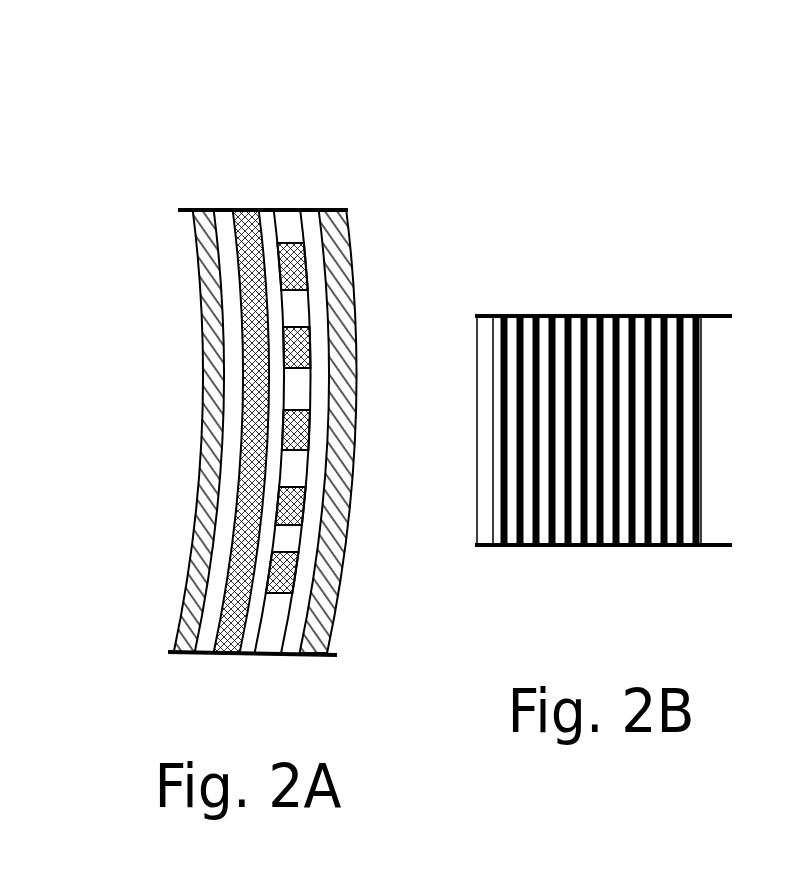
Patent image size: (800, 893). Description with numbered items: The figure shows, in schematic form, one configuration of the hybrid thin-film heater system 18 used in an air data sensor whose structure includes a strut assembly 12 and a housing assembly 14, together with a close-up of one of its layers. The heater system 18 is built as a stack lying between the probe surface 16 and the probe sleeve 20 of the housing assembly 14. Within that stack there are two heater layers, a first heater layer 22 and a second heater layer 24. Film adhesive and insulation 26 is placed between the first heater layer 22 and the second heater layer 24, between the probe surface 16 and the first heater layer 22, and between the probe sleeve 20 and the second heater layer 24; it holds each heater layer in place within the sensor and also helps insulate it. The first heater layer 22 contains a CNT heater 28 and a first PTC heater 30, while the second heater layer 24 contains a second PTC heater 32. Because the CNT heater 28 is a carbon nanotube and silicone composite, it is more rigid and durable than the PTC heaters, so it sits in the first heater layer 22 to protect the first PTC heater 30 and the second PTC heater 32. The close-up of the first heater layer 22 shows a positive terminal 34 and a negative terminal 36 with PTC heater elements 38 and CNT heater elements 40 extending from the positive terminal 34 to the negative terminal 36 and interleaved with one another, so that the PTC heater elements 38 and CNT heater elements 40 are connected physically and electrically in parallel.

In FIG. 2A, the strut assembly 12 is at (369, 190).
In FIG. 2A, the housing assembly 14 is at (270, 394).
In FIG. 2A, the probe surface 16 is at (332, 246).
In FIG. 2A, the hybrid thin-film heater system 18 is at (285, 196).
In FIG. 2A, the probe sleeve 20 is at (208, 532).
In FIG. 2A, the first heater layer 22 is at (252, 660).
In FIG. 2B, the first heater layer 22 is at (659, 272).
In FIG. 2A, the second heater layer 24 is at (213, 660).
In FIG. 2A, the film adhesive and insulation 26 is at (320, 397).
In FIG. 2A, the CNT heater 28 is at (298, 382).
In FIG. 2A, the first PTC heater 30 is at (293, 507).
In FIG. 2A, the second PTC heater 32 is at (245, 208).
In FIG. 2B, the positive terminal 34 is at (720, 315).
In FIG. 2B, the negative terminal 36 is at (708, 548).
In FIG. 2B, the PTC heater elements 38 is at (538, 422).
In FIG. 2B, the CNT heater elements 40 is at (580, 316).